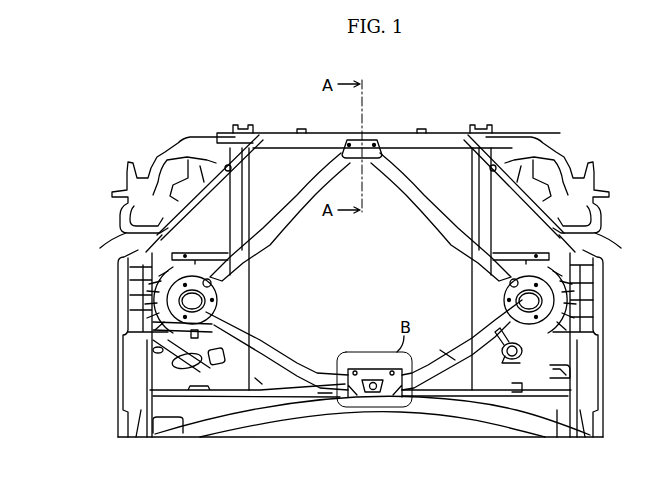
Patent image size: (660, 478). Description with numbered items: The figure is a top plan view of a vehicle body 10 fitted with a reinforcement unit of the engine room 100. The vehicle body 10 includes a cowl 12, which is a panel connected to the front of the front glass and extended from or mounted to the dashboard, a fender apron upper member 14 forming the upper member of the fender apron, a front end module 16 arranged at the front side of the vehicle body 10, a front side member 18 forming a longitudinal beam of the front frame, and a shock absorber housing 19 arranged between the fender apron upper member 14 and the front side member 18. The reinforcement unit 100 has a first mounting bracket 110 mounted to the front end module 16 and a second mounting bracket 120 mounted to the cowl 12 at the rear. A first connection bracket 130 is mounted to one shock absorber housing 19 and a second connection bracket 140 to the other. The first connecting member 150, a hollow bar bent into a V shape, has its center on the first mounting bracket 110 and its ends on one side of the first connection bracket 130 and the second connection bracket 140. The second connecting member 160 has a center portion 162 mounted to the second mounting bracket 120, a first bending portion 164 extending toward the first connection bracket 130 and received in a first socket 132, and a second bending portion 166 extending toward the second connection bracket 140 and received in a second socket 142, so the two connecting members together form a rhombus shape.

The vehicle body 10 is at (614, 383).
The cowl 12 is at (272, 413).
The fender apron upper member 14 is at (530, 210).
The front end module 16 is at (423, 133).
The front side member 18 is at (510, 150).
The shock absorber housing 19 is at (170, 268).
The reinforcement unit of the engine room 100 is at (437, 163).
The first mounting bracket 110 is at (373, 147).
The second mounting bracket 120 is at (373, 393).
The first connection bracket 130 is at (167, 300).
The first socket 132 is at (217, 325).
The second connection bracket 140 is at (567, 283).
The second socket 142 is at (505, 365).
The first connecting member 150 is at (300, 192).
The second connecting member 160 is at (303, 348).
The center portion 162 is at (325, 397).
The first bending portion 164 is at (262, 384).
The second bending portion 166 is at (450, 362).